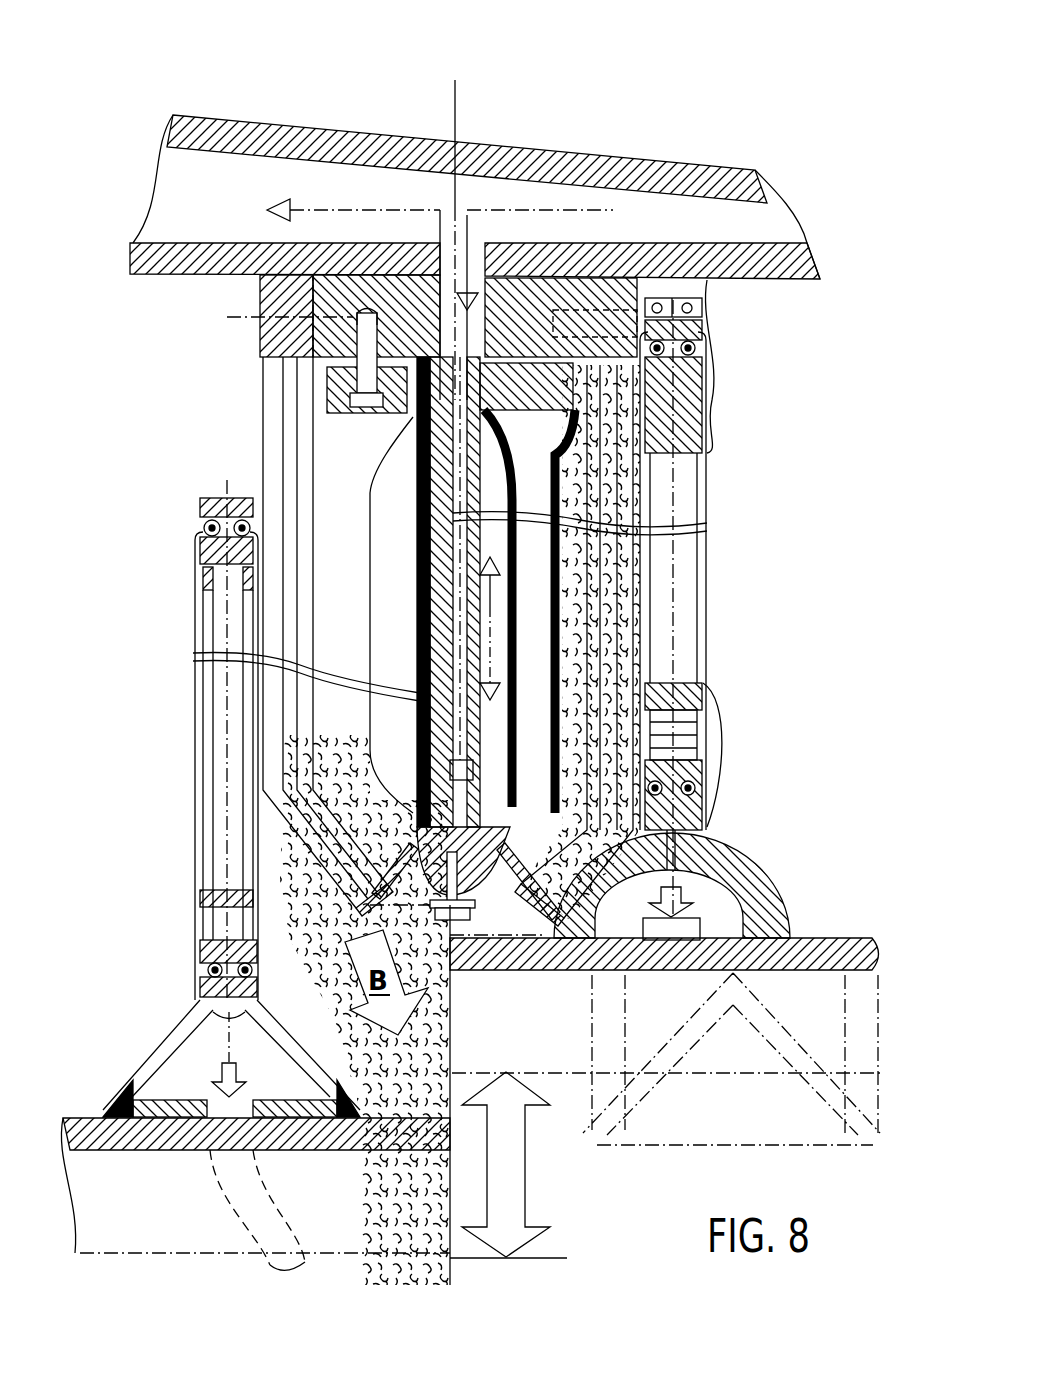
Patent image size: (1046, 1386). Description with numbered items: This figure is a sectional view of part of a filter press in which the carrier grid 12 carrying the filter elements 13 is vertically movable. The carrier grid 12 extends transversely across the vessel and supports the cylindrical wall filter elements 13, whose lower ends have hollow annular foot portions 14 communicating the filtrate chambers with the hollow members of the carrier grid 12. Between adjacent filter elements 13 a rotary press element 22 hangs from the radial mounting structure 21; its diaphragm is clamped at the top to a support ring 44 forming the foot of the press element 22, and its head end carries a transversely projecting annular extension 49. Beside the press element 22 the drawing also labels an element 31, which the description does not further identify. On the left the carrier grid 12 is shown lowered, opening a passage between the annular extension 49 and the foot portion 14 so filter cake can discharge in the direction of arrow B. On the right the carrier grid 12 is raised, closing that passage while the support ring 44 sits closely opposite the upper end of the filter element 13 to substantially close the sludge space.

The carrier grid 12 is at (838, 937).
The filter element 13 is at (192, 780).
The hollow annular foot portion 14 is at (728, 865).
The radial mounting structure 21 is at (620, 177).
The rotary press element 22 is at (380, 458).
The feed tubes 31 is at (273, 460).
The support ring 44 is at (280, 300).
The annular extension 49 is at (527, 875).